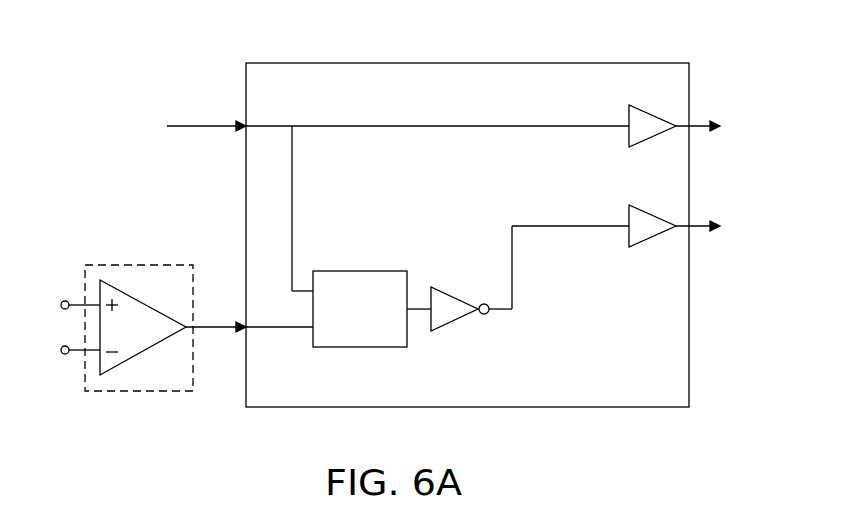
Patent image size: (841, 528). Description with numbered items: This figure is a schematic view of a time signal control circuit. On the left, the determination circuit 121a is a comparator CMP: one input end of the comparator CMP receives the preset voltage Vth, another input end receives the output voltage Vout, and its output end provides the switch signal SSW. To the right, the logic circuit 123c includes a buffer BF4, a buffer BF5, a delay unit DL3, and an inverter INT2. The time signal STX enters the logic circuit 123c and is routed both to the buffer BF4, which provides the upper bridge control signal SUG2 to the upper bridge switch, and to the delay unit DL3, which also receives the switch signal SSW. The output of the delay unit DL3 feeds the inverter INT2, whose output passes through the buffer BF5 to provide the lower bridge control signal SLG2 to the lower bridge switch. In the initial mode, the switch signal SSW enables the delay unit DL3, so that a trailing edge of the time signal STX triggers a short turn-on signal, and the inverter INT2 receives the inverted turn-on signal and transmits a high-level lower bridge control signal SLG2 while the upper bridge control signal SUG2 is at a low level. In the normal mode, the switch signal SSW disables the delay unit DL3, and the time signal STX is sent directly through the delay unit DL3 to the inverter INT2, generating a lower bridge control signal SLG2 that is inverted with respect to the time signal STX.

The logic circuit 123c is at (499, 63).
The determination circuit 121a is at (128, 265).
The comparator CMP is at (143, 327).
The delay unit DL3 is at (360, 347).
The inverter INT2 is at (456, 320).
The buffer BF4 is at (652, 137).
The buffer BF5 is at (652, 237).
The time signal STX is at (380, 203).
The switch signal SSW is at (249, 316).
The upper bridge control signal SUG2 is at (723, 126).
The lower bridge control signal SLG2 is at (722, 226).
The preset voltage Vth is at (62, 305).
The output voltage Vout is at (58, 350).